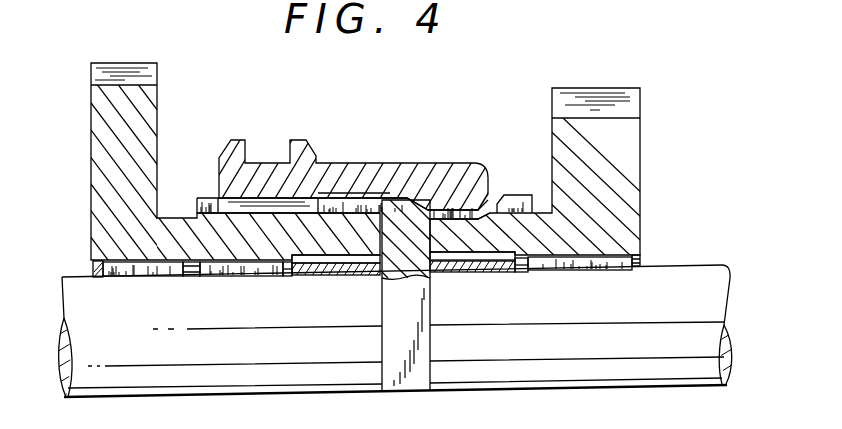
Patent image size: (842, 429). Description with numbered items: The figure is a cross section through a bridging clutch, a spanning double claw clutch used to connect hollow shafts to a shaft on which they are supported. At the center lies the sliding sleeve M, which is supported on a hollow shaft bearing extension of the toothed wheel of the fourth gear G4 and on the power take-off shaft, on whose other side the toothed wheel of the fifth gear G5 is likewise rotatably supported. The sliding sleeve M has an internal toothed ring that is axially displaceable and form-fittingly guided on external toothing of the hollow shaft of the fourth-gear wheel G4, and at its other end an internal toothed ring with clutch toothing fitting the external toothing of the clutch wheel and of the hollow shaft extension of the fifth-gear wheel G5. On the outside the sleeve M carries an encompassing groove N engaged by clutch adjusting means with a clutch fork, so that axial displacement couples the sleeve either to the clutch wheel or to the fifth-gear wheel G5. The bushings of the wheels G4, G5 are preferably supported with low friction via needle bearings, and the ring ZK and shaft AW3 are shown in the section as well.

The toothed wheel of the 4th gear G4 is at (158, 129).
The toothed wheel of the 5th gear G5 is at (609, 87).
The sliding sleeve M is at (349, 161).
The intermediate ring ZK is at (407, 200).
The encompassing groove N is at (642, 262).
The drive shaft AW3 is at (603, 310).